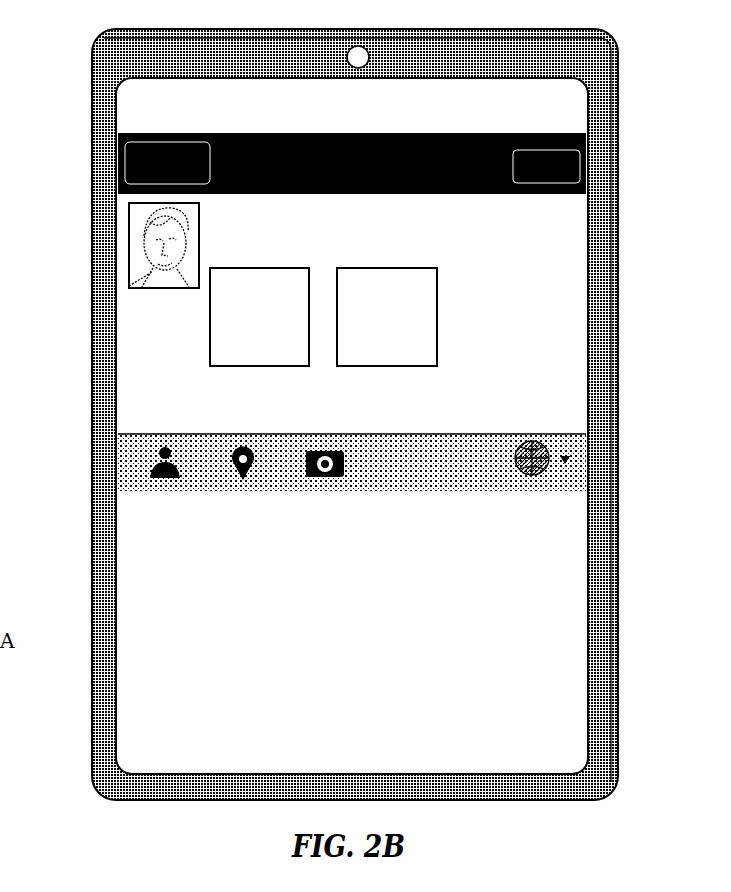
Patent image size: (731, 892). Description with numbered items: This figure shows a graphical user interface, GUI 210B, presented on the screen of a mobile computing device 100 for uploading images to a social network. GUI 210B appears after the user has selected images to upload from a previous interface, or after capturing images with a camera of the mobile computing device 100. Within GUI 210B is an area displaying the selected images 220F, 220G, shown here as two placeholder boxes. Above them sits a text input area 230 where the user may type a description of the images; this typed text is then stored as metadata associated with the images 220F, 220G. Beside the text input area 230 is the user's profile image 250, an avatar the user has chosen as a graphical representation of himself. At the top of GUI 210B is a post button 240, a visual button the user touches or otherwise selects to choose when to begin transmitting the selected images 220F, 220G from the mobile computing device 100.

The mobile computing device 100 is at (228, 63).
The GUI 210B is at (572, 400).
The image 220F is at (259, 317).
The image 220G is at (387, 317).
The text input area 230 is at (502, 227).
The post button 240 is at (575, 150).
The profile image 250 is at (130, 255).